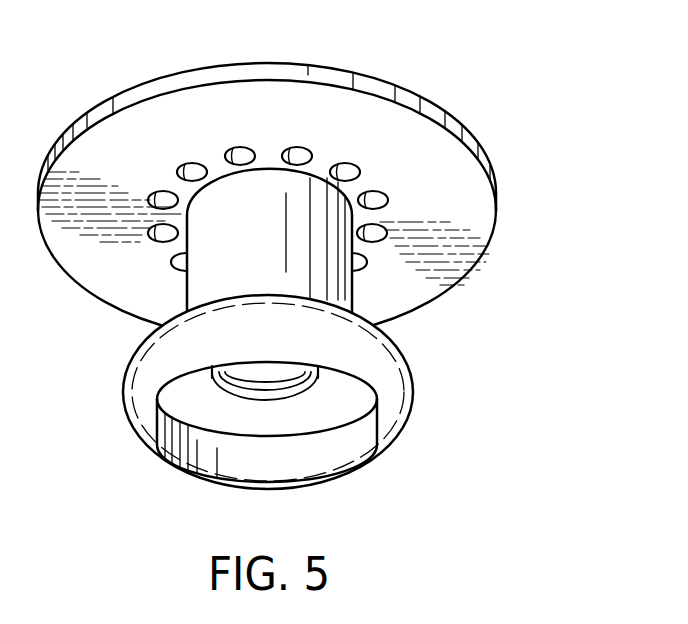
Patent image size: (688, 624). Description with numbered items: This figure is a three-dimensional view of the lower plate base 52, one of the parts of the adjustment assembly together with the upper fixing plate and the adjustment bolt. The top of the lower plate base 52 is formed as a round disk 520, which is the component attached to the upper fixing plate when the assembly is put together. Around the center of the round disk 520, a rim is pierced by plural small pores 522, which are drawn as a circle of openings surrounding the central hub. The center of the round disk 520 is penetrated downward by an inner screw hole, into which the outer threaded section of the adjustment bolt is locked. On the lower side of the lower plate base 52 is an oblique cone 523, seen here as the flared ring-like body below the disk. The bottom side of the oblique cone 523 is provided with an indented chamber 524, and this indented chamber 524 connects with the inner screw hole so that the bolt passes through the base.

The lower plate base 52 is at (354, 257).
The round disk 520 is at (398, 97).
The small pores 522 is at (373, 200).
The oblique cone 523 is at (393, 368).
The indented chamber 524 is at (337, 412).